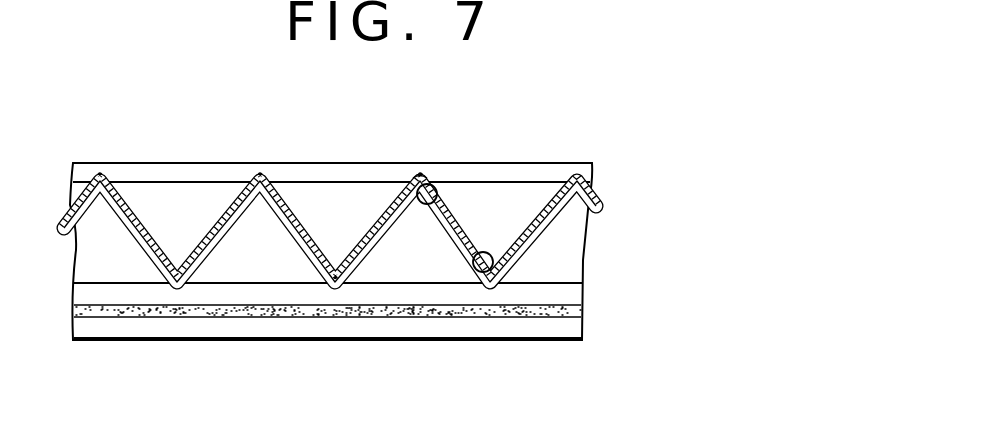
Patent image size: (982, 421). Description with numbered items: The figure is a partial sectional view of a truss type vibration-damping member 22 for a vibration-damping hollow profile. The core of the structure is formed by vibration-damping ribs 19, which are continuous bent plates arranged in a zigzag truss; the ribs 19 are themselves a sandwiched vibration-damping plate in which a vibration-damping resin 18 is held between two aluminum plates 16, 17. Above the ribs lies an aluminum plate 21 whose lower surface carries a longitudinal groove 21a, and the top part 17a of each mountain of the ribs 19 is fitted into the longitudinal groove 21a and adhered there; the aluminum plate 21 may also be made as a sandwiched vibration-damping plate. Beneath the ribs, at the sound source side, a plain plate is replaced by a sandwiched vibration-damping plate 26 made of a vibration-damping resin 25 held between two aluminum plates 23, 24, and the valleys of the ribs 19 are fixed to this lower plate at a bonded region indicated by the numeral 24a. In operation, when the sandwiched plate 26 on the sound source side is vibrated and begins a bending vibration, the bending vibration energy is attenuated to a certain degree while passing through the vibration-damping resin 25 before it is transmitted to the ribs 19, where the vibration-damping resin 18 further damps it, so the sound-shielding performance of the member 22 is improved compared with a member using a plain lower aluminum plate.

The vibration-damping member 22 is at (163, 163).
The aluminum plate 21 is at (535, 163).
The longitudinal groove 21a is at (440, 183).
The vibration-damping ribs 19 is at (401, 200).
The aluminum plate 17 is at (593, 178).
The top part 17a is at (413, 178).
The vibration-damping resin 18 is at (588, 187).
The aluminum plate 16 is at (683, 168).
The sandwiched vibration-damping plate 26 is at (408, 319).
The aluminum plate 24 is at (583, 290).
The bonded portion of base layer 24a is at (476, 258).
The vibration-damping resin 25 is at (580, 310).
The aluminum plate 23 is at (377, 347).